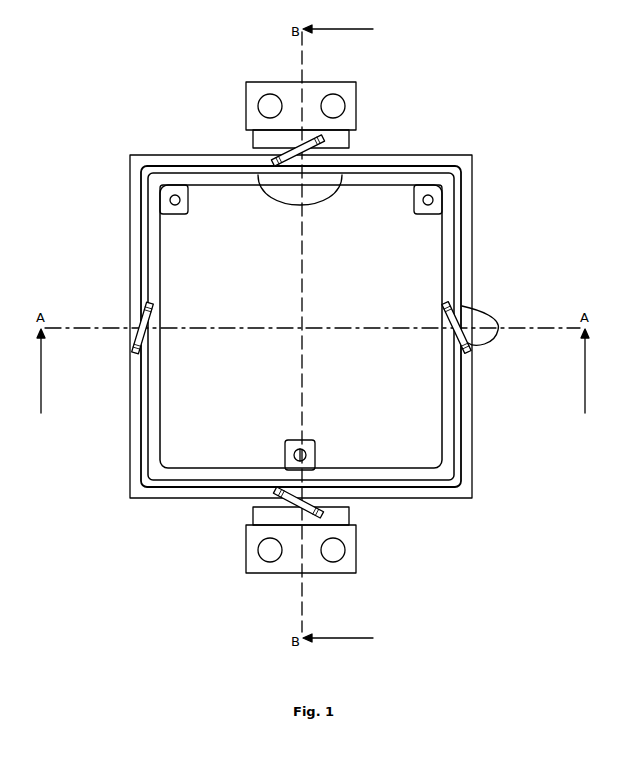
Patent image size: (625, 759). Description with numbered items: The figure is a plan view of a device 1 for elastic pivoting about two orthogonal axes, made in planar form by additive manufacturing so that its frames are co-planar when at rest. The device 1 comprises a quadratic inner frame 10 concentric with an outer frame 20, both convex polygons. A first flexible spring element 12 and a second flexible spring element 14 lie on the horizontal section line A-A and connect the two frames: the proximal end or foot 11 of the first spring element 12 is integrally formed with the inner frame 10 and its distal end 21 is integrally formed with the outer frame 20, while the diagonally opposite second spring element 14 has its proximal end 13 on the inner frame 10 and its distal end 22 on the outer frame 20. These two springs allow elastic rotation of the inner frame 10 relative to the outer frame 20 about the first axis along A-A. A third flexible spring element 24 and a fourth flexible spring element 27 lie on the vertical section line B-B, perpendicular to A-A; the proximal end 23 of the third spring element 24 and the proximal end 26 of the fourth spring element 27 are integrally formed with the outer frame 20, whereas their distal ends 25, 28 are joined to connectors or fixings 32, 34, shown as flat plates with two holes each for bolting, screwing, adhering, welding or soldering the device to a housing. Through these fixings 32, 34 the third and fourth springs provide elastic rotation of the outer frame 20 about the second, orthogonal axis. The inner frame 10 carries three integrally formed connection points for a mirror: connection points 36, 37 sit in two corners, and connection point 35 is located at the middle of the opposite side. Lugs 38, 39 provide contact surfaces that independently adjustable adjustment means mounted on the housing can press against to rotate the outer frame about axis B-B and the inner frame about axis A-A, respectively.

The device for elastic pivoting about two orthogonal axes 1 is at (487, 151).
The inner frame 10 is at (158, 392).
The proximal end of first spring element 11 is at (158, 312).
The first flexible spring element 12 is at (148, 305).
The proximal end of second spring element 13 is at (445, 303).
The second flexible spring element 14 is at (462, 306).
The outer frame 20 is at (130, 458).
The distal end of first spring element 21 is at (132, 340).
The distal end of second spring element 22 is at (470, 350).
The proximal end of third spring element 23 is at (275, 491).
The third flexible spring element 24 is at (325, 511).
The distal end of third spring element 25 is at (352, 508).
The proximal end of fourth spring element 26 is at (285, 166).
The fourth flexible spring element 27 is at (278, 142).
The distal end of fourth spring element 28 is at (352, 140).
The connector or fixing 32 is at (358, 572).
The connector or fixing 34 is at (358, 90).
The connection point 35 is at (290, 440).
The connection point 36 is at (188, 214).
The connection point 37 is at (413, 205).
The lug 38 is at (500, 325).
The lug 39 is at (310, 203).